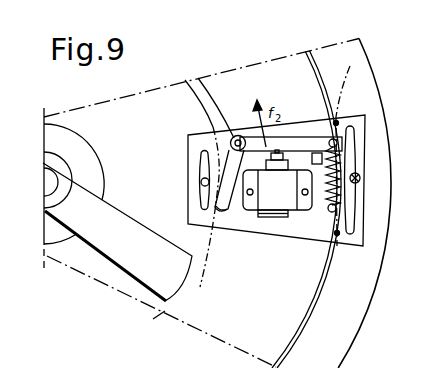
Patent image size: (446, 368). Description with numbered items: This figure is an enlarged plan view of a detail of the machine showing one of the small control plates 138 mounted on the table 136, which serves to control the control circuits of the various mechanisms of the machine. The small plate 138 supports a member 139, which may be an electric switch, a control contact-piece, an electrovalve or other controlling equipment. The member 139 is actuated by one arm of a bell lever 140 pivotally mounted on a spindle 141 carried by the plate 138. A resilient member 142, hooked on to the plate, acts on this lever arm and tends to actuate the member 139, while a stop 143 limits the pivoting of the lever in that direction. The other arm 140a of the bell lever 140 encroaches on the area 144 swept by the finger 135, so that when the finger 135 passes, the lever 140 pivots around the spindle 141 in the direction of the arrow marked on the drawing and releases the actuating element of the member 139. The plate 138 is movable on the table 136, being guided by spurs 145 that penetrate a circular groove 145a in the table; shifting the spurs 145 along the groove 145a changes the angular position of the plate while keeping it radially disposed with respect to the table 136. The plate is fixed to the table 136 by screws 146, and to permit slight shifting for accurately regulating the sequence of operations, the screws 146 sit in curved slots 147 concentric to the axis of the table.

The finger 135 is at (168, 239).
The table 136 is at (360, 330).
The control plate 138 is at (248, 135).
The member 139 is at (268, 200).
The bell lever 140 is at (285, 137).
The other arm of the bell lever 140a is at (226, 211).
The spindle 141 is at (207, 83).
The resilient member 142 is at (326, 206).
The stop 143 is at (312, 154).
The area swept by the finger 144 is at (198, 268).
The spur 145 is at (346, 259).
The circular groove 145a is at (318, 307).
The screw 146 is at (202, 179).
The curved slot 147 is at (200, 198).